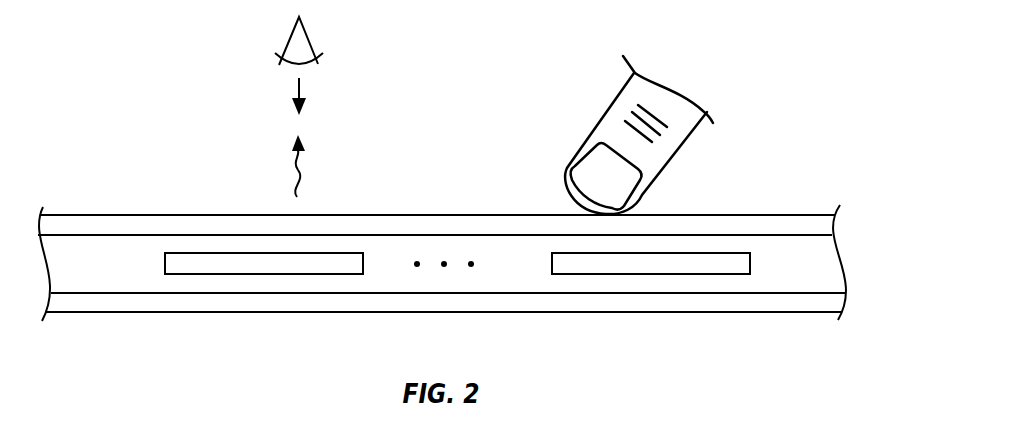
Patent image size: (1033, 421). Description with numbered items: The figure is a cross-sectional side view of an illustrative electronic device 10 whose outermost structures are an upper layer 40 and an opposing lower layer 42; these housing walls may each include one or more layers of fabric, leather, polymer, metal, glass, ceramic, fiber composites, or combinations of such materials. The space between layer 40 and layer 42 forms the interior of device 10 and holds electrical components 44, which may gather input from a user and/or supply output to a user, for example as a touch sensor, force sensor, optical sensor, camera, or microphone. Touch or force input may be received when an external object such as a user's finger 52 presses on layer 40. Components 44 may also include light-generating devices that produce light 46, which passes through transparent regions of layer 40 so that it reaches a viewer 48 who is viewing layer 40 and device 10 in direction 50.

The electronic device 10 is at (880, 252).
The layer 40 is at (772, 227).
The layer 42 is at (772, 312).
The electrical components 44 is at (260, 274).
The light 46 is at (300, 163).
The viewer 48 is at (307, 37).
The direction 50 is at (302, 85).
The finger 52 is at (600, 115).